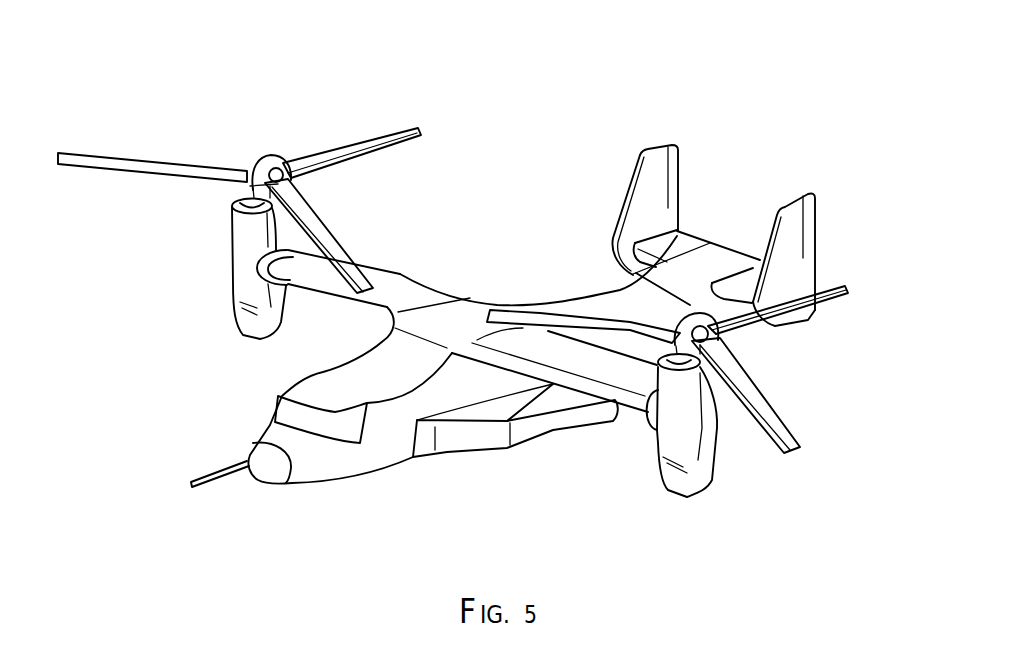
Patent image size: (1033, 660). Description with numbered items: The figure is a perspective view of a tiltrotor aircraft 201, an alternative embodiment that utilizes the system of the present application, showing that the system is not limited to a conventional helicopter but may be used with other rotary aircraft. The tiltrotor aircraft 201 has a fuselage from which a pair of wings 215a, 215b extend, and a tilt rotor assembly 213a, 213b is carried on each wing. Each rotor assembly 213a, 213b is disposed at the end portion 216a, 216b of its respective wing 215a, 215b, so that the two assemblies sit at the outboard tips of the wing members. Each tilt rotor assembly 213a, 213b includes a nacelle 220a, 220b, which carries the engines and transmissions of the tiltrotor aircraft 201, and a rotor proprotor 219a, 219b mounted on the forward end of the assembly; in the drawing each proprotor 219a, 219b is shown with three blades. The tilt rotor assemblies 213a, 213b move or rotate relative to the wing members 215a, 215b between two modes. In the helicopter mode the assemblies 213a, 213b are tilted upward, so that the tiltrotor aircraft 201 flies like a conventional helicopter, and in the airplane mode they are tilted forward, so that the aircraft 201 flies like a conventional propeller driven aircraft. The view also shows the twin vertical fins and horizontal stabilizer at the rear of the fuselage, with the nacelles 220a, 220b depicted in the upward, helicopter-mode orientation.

The tiltrotor aircraft 201 is at (178, 87).
The rotor assembly 213a is at (242, 196).
The rotor assembly 213b is at (693, 360).
The wing 215a is at (402, 273).
The wing 215b is at (552, 384).
The end portion 216a is at (302, 236).
The end portion 216b is at (644, 369).
The rotor proprotor 219a is at (368, 139).
The rotor proprotor 219b is at (756, 350).
The nacelle 220a is at (233, 287).
The nacelle 220b is at (713, 470).